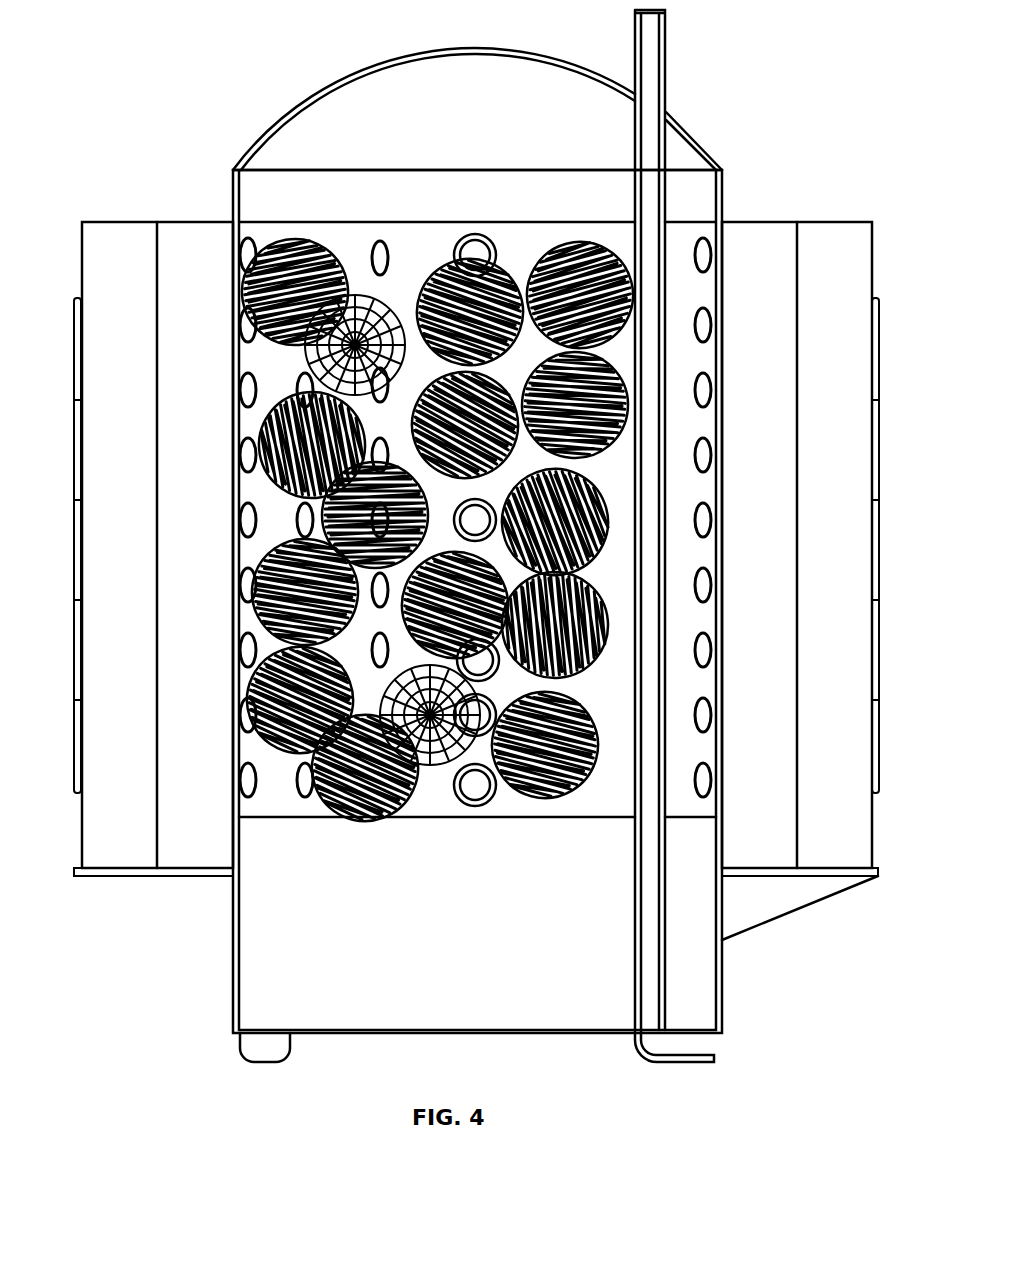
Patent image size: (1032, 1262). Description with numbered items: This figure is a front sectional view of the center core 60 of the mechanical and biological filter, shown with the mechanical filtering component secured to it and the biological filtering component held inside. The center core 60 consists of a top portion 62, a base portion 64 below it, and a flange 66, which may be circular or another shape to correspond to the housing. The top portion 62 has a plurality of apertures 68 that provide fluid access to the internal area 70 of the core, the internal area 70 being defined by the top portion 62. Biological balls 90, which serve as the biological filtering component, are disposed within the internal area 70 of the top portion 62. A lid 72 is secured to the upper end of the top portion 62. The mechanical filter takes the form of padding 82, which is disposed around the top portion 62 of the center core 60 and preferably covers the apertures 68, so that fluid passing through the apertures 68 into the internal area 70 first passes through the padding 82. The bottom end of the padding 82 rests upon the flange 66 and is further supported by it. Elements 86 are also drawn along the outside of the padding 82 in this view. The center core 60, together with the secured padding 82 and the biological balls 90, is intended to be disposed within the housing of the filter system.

The center core 60 is at (783, 125).
The top portion 62 is at (720, 600).
The base portion 64 is at (233, 975).
The flange 66 is at (120, 876).
The apertures 68 is at (385, 248).
The internal area 70 is at (425, 250).
The lid 72 is at (680, 118).
The padding 82 is at (175, 222).
The support bar 86 is at (75, 725).
The biological balls 90 is at (280, 245).